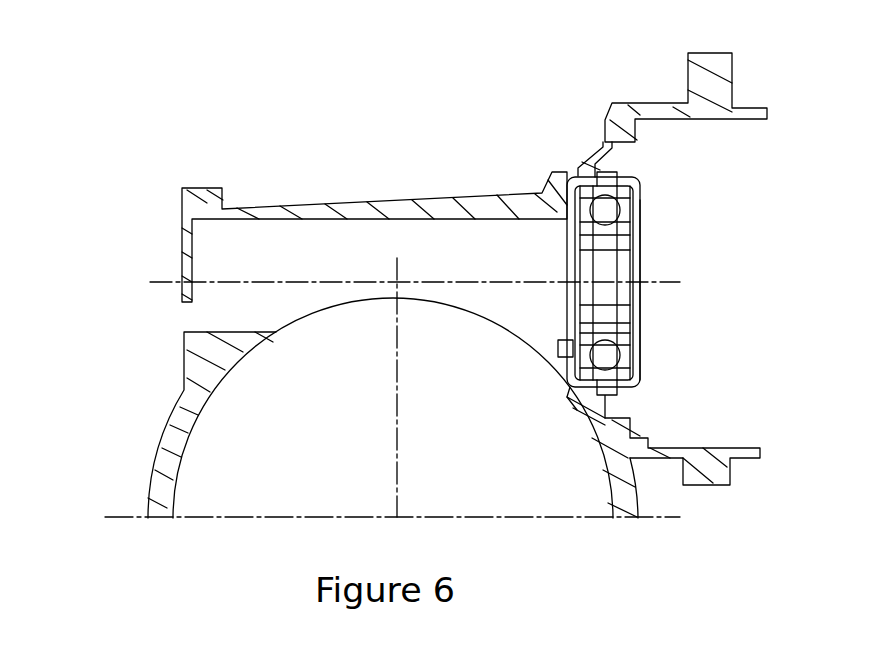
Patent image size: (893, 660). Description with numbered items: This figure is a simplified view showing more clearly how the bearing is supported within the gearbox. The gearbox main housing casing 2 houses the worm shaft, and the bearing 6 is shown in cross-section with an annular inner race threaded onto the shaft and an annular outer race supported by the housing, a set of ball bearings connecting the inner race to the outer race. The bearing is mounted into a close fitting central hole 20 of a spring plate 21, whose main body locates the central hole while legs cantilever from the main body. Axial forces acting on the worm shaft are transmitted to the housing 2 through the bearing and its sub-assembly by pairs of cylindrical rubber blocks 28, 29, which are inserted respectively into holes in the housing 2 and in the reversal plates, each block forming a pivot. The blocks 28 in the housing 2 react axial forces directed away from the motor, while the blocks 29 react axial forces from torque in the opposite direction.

The gearbox main housing casing 2 is at (365, 200).
The central hole 20 is at (572, 173).
The cylindrical rubber blocks 29 is at (688, 83).
The tail bearing 6 is at (640, 200).
The spring plate 21 is at (617, 250).
The cylindrical rubber blocks 28 is at (565, 345).